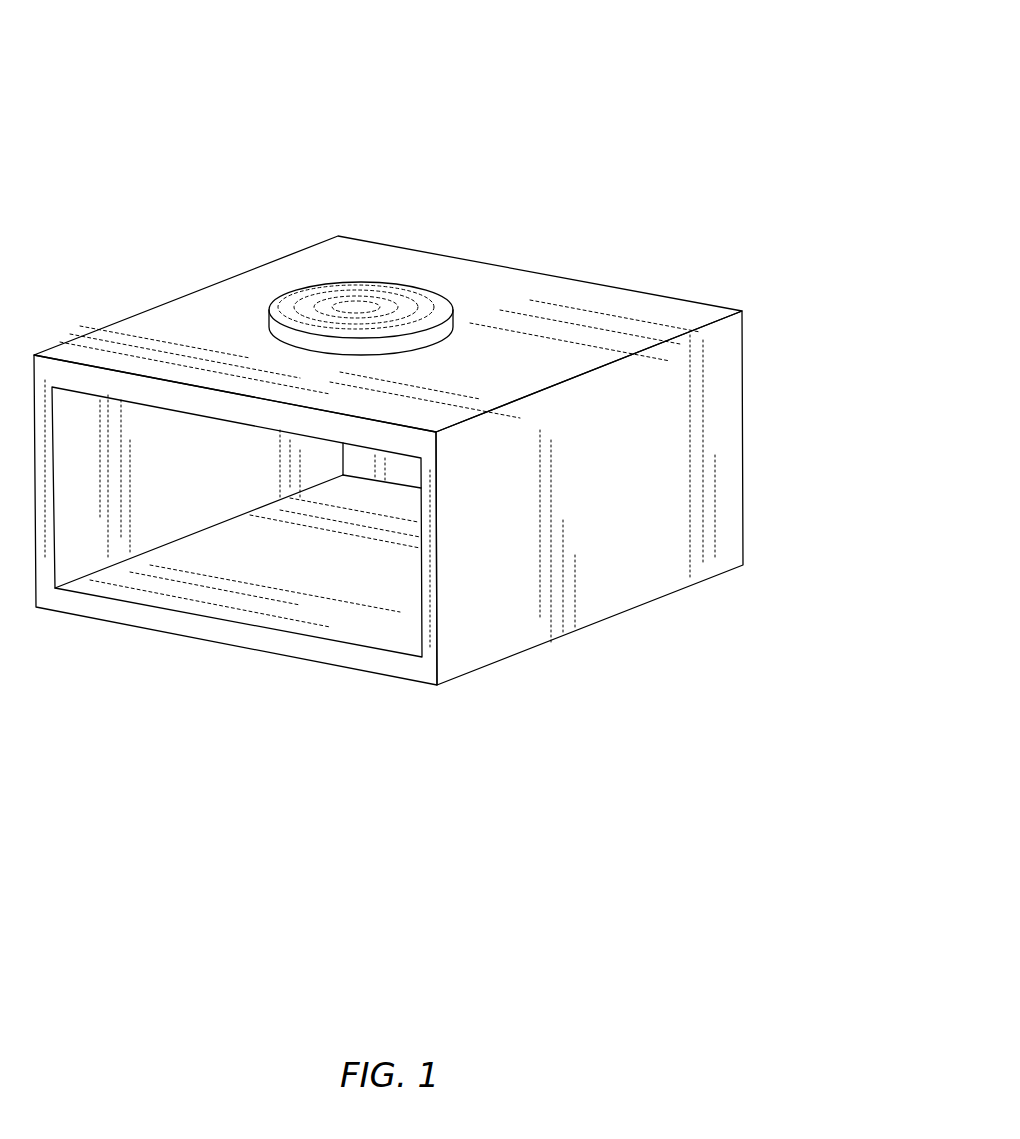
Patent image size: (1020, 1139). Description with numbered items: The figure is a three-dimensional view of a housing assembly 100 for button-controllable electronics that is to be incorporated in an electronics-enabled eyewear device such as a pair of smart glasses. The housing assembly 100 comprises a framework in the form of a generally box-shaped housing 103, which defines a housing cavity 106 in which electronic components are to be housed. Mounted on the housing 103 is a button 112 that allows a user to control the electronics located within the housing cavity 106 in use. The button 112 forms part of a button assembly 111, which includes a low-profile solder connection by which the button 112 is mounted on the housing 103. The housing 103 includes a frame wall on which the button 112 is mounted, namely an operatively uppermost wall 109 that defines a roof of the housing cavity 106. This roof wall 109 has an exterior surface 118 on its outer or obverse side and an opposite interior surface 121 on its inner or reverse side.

The housing assembly 100 is at (388, 353).
The housing 103 is at (518, 620).
The housing cavity 106 is at (210, 556).
The uppermost wall 109 is at (633, 310).
The button assembly 111 is at (351, 265).
The button 112 is at (427, 310).
The exterior surface 118 is at (540, 363).
The interior surface 121 is at (156, 418).